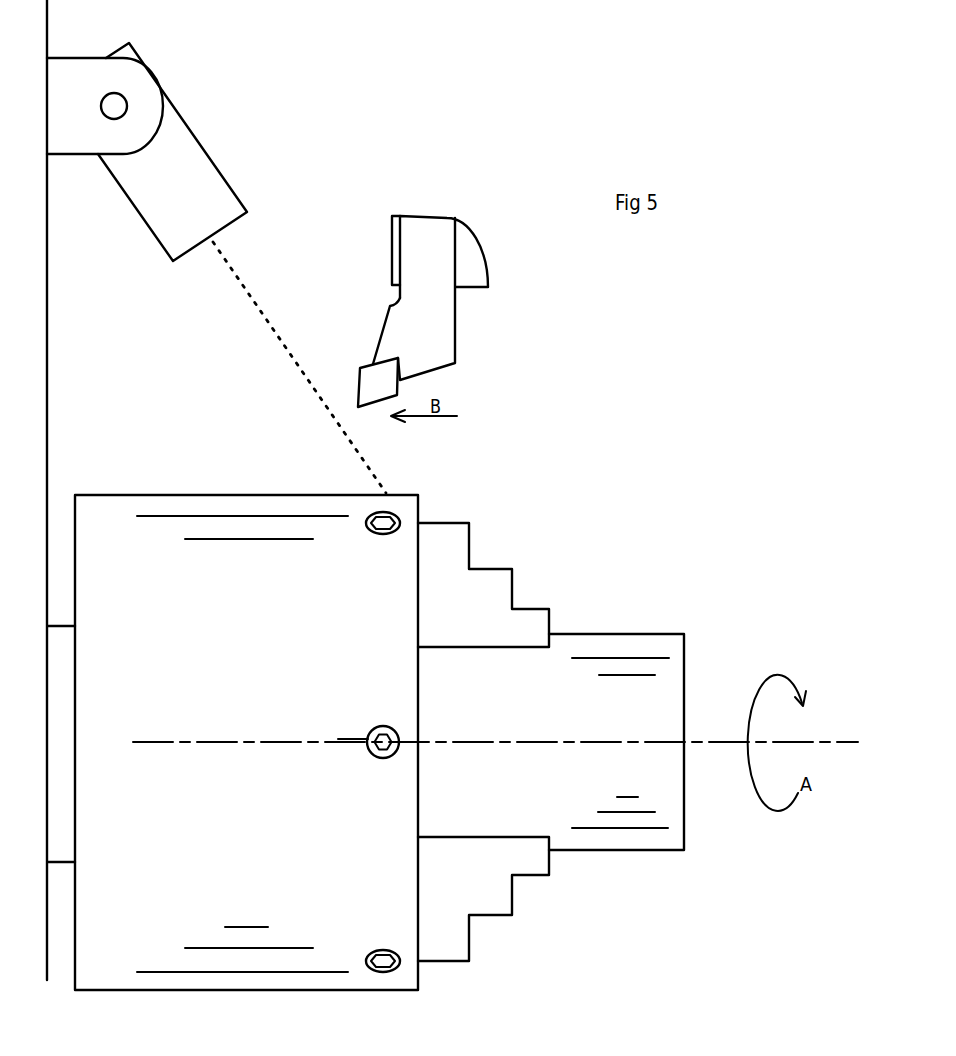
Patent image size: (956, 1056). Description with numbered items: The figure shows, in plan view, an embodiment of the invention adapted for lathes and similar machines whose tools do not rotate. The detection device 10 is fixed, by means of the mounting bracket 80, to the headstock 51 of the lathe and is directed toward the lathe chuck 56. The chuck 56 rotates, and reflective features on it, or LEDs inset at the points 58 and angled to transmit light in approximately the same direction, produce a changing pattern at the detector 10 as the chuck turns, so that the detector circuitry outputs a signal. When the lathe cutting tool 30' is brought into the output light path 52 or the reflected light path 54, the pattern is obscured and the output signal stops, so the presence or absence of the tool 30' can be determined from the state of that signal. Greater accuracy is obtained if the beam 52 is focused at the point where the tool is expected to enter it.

The detection device 10 is at (185, 146).
The lathe cutting tool 30' is at (437, 311).
The headstock 51 is at (47, 338).
The output light path 52 is at (299, 367).
The reflected light path 54 is at (238, 274).
The lathe chuck 56 is at (215, 865).
The points where LEDs are inset 58 is at (377, 733).
The mounting bracket 80 is at (72, 73).